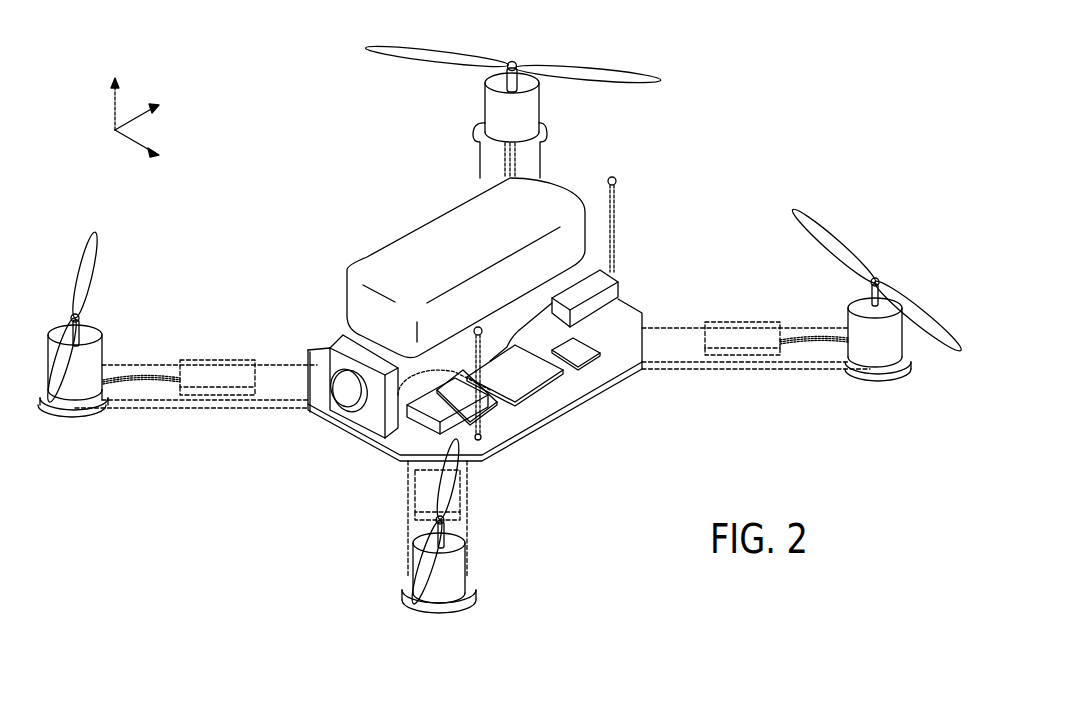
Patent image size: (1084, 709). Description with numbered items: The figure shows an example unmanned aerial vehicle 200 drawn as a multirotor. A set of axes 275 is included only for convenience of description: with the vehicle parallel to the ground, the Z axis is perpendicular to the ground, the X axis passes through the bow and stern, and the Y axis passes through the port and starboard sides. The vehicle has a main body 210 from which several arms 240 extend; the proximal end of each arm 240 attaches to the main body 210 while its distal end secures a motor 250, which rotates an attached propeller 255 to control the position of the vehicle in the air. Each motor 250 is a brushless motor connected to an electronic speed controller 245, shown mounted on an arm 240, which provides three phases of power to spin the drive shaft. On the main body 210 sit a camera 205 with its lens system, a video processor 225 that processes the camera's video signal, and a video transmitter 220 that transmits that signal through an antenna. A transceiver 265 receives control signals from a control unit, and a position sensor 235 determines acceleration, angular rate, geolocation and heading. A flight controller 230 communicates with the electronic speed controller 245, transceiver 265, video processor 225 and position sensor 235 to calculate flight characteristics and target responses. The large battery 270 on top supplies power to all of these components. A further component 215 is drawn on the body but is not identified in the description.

The unmanned aerial vehicle 200 is at (700, 158).
The camera 205 is at (345, 356).
The main body 210 is at (318, 395).
The electronics module 215 is at (437, 427).
The video transmitter 220 is at (488, 440).
The video processor 225 is at (488, 410).
The flight controller 230 is at (535, 378).
The position sensor 235 is at (592, 362).
The arm 240 is at (692, 367).
The electronic speed controller 245 is at (768, 352).
The motor 250 is at (893, 347).
The propeller 255 is at (817, 228).
The transceiver 265 is at (610, 292).
The battery 270 is at (423, 236).
The axes 275 is at (160, 78).